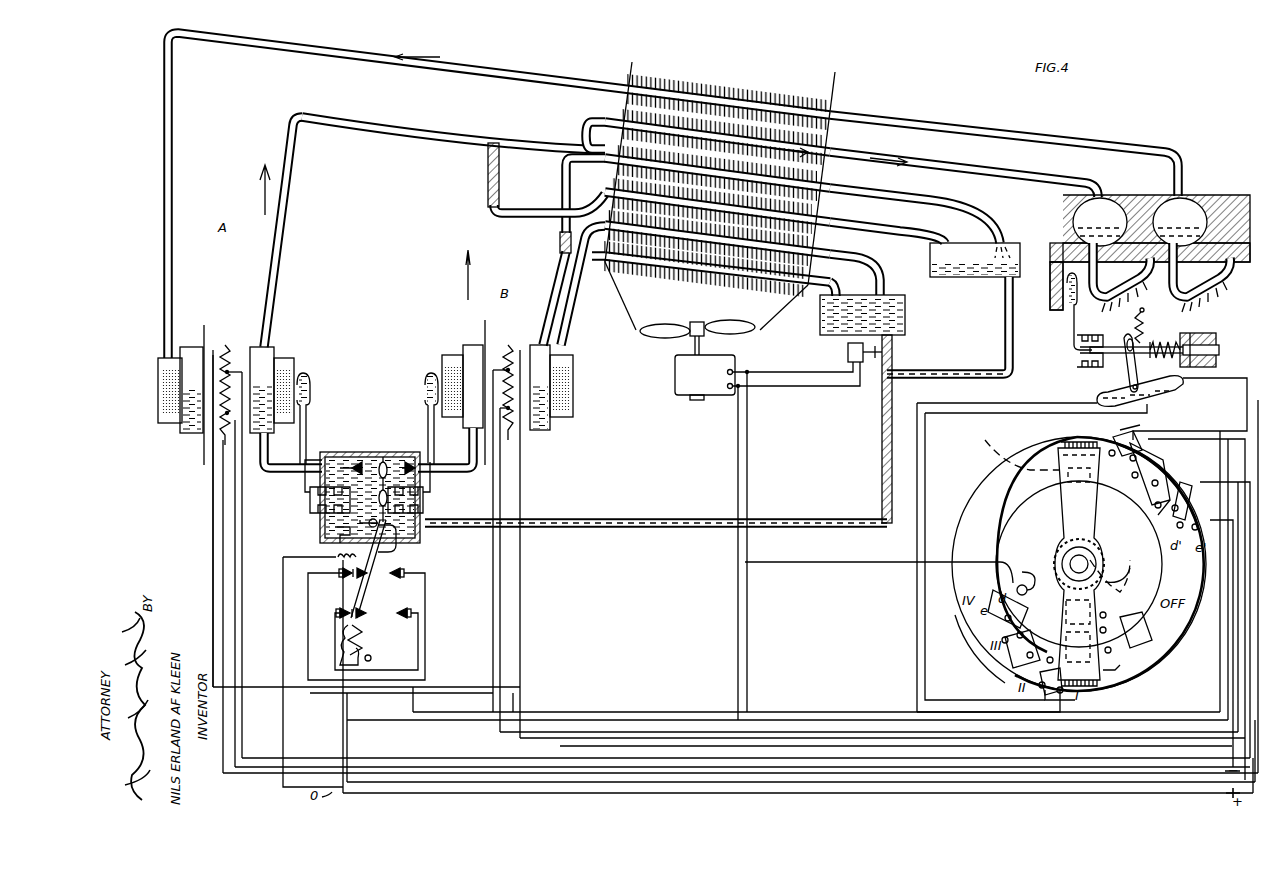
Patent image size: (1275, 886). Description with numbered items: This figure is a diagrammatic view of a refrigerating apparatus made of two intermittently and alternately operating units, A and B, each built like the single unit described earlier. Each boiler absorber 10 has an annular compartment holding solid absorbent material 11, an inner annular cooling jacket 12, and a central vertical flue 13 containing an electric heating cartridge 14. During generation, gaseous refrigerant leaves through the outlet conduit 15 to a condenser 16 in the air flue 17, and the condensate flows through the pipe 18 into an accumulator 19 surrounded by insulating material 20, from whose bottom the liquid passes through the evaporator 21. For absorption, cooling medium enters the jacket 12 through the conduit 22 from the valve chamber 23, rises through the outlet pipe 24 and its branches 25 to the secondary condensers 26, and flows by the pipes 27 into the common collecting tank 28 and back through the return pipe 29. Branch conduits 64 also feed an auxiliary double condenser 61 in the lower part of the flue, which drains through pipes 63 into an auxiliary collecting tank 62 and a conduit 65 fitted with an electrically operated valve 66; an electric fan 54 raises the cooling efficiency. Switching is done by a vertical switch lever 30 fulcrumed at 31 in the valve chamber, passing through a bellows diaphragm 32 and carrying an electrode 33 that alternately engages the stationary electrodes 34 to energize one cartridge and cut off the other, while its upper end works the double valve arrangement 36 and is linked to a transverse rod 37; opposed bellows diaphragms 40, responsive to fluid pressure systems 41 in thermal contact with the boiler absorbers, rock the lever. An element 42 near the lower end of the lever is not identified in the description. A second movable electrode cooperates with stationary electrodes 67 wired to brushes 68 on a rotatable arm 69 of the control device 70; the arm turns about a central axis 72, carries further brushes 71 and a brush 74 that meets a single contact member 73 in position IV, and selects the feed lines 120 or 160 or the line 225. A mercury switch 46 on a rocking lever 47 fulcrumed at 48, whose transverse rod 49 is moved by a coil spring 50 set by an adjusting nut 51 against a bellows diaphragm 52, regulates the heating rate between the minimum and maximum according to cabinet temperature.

The boiler absorber 10 is at (154, 366).
The solid absorbent material 11 is at (160, 400).
The inner annular cooling jacket 12 is at (560, 438).
The central vertical flue 13 is at (206, 330).
The electric heating cartridge 14 is at (369, 538).
The outlet conduit 15 is at (172, 270).
The condenser 16 is at (750, 92).
The air flue 17 is at (838, 90).
The pipe 18 is at (1020, 130).
The accumulator 19 is at (1100, 198).
The insulating material 20 is at (1230, 195).
The evaporator 21 is at (1132, 300).
The conduit 22 is at (368, 448).
The valve chamber 23 is at (366, 455).
The outlet pipe 24 is at (282, 270).
The branches 25 is at (530, 134).
The secondary condensers 26 is at (818, 176).
The pipes 27 is at (925, 190).
The common collecting tank 28 is at (978, 242).
The return pipe 29 is at (1005, 330).
The switch lever 30 is at (370, 568).
The fulcrum 31 is at (336, 557).
The bellows diaphragm 32 is at (390, 550).
The electrode 33 is at (373, 592).
The stationary electrode member 34 is at (405, 573).
The reciprocatable valve 36 is at (352, 462).
The transverse rod 37 is at (330, 525).
The bellows diaphragm 40 is at (310, 508).
The fluid pressure system 41 is at (308, 385).
The spring 42 is at (366, 648).
The mercury switch 46 is at (1180, 388).
The rocking lever 47 is at (1128, 370).
The fulcrum 48 is at (1148, 369).
The transverse rod 49 is at (1147, 325).
The coil spring 50 is at (1160, 345).
The adjusting nut 51 is at (1215, 336).
The bellows diaphragm 52 is at (1083, 333).
The electric fan 54 is at (675, 375).
The auxiliary double condenser 61 is at (808, 238).
The auxiliary collecting tank 62 is at (862, 305).
The pipes 63 is at (862, 248).
The branch conduits 64 is at (490, 218).
The conduit 65 is at (895, 352).
The electrically operated valve 66 is at (846, 352).
The stationary electrodes 67 is at (368, 630).
The contact-making brushes 68 is at (1110, 615).
The rotatable arm 69 is at (1058, 522).
The control device 70 is at (1079, 564).
The contact-making brushes 71 is at (1090, 433).
The central axis 72 is at (1070, 560).
The contact member 73 is at (1016, 587).
The brush 74 is at (1126, 579).
The feed line 120 is at (552, 720).
The feed lines 160 is at (594, 732).
The line 225 is at (632, 743).